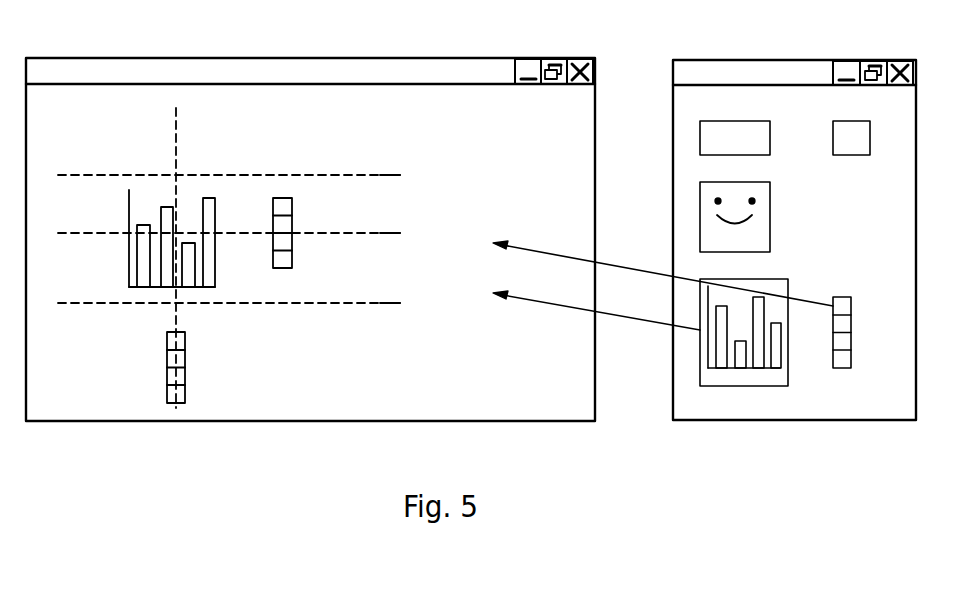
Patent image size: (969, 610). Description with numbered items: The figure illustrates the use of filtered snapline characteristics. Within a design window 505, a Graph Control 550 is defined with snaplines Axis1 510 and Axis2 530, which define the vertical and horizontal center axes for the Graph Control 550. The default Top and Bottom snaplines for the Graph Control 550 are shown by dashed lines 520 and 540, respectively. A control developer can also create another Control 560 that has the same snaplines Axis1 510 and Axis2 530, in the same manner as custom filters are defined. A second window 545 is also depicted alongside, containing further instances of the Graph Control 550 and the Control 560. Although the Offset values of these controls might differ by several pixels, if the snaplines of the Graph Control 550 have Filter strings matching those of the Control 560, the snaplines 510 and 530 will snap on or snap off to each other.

The first window 505 is at (341, 58).
The Snapline Axis1 510 is at (175, 132).
The default Top snapline 520 is at (400, 177).
The Snapline Axis2 530 is at (400, 235).
The default Bottom snapline 540 is at (400, 305).
The second window 545 is at (792, 60).
The Graph Control 550 is at (128, 200).
The Control 560 is at (293, 205).